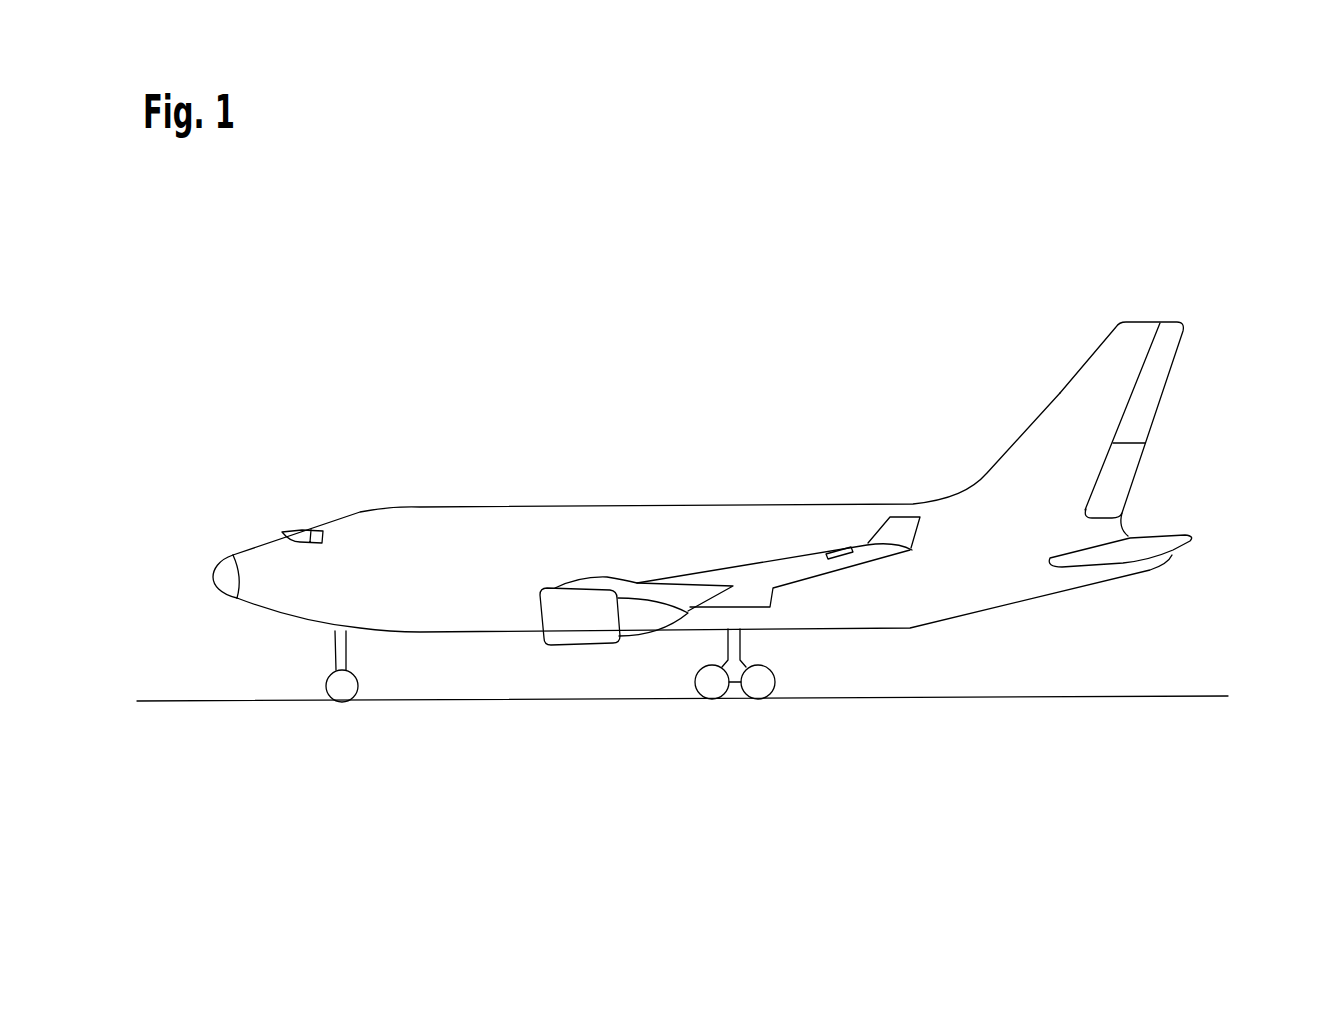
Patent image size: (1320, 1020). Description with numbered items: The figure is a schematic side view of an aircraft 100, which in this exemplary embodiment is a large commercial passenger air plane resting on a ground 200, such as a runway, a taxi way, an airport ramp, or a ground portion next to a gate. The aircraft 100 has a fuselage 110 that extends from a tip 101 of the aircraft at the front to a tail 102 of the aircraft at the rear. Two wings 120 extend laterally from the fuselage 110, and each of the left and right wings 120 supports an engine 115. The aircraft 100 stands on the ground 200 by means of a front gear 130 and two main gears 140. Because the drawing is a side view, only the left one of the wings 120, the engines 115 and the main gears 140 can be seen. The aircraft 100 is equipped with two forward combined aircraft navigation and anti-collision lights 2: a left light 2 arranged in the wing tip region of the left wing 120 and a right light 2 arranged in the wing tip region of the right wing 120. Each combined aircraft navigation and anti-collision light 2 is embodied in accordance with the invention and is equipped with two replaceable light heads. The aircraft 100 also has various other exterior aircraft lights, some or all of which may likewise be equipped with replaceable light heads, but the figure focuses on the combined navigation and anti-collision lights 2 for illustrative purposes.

The aircraft 100 is at (704, 518).
The tip 101 is at (204, 570).
The tail 102 is at (1192, 511).
The fuselage 110 is at (663, 527).
The engine 115 is at (590, 634).
The wing 120 is at (737, 526).
The combined aircraft navigation and anti-collision light 2 is at (838, 548).
The front gear 130 is at (318, 681).
The main gear 140 is at (791, 677).
The ground 200 is at (1140, 698).